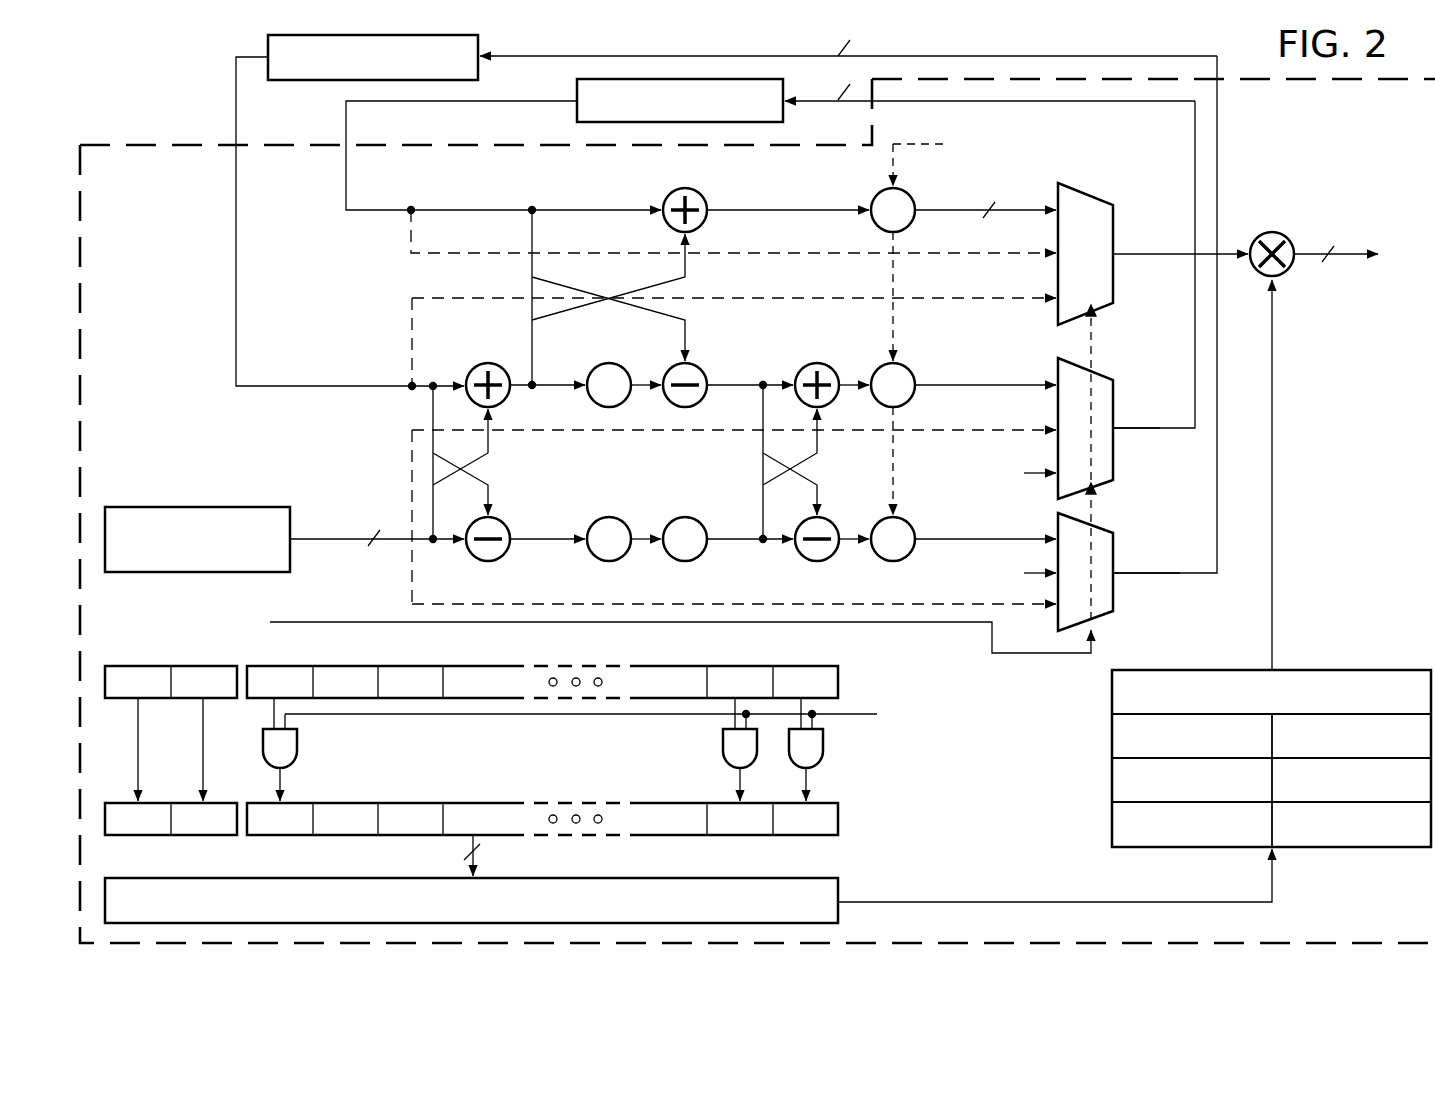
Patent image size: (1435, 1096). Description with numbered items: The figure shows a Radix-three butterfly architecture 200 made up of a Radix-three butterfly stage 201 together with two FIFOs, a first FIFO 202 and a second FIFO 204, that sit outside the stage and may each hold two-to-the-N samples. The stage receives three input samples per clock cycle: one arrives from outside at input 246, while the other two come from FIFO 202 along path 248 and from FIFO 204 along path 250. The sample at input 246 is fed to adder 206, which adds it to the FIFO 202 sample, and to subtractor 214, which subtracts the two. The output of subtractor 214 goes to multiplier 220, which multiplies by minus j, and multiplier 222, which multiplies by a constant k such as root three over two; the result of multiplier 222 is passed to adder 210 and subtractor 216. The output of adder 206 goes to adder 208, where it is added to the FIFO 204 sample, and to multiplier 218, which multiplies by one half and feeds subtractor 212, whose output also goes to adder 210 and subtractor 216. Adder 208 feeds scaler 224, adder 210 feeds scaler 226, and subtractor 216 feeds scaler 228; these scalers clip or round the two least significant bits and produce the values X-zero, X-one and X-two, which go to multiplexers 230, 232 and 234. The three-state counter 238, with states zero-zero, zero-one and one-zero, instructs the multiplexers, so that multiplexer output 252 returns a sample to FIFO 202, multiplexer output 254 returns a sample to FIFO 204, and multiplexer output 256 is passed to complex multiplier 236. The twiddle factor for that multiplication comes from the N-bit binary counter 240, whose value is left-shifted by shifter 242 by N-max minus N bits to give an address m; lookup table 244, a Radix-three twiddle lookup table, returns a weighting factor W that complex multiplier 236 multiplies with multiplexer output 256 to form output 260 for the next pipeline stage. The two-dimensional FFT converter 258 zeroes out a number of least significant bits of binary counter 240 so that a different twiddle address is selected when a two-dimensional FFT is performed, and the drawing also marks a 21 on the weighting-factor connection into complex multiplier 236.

The Radix-3 butterfly architecture 200 is at (150, 85).
The Radix-3 butterfly stage 201 is at (1353, 134).
The FIFO 1 202 is at (323, 81).
The FIFO 2 204 is at (580, 88).
The adder 206 is at (476, 372).
The adder 208 is at (672, 200).
The adder 210 is at (804, 372).
The subtractor 212 is at (725, 354).
The subtractor 214 is at (474, 556).
The subtractor 216 is at (804, 556).
The multiplier 218 is at (594, 372).
The multiplier 220 is at (604, 518).
The multiplier 222 is at (690, 518).
The scaler 224 is at (880, 200).
The scaler 226 is at (880, 375).
The scaler 228 is at (872, 556).
The multiplexer 230 is at (1118, 215).
The multiplexer 232 is at (1118, 390).
The multiplexer 234 is at (1118, 545).
The complex multiplier 236 is at (1280, 234).
The 3-state counter 238 is at (180, 608).
The binary counter 240 is at (840, 680).
The shifter 242 is at (840, 894).
The lookup table 244 is at (1350, 670).
The input 246 is at (328, 540).
The path 248 is at (325, 386).
The path 250 is at (380, 210).
The multiplexer output 252 is at (1145, 577).
The multiplexer output 254 is at (1145, 432).
The multiplexer output 256 is at (1145, 258).
The 2D FFT converter 258 is at (842, 718).
The output 260 is at (1352, 246).
The twiddle factor line 21 is at (1282, 345).